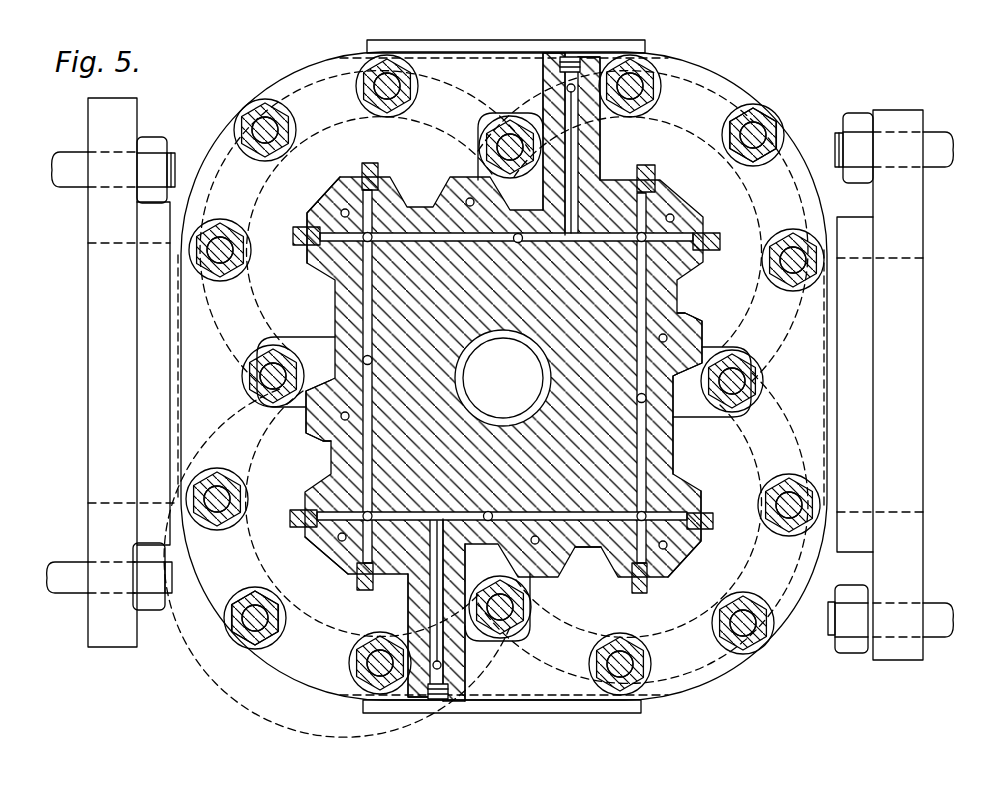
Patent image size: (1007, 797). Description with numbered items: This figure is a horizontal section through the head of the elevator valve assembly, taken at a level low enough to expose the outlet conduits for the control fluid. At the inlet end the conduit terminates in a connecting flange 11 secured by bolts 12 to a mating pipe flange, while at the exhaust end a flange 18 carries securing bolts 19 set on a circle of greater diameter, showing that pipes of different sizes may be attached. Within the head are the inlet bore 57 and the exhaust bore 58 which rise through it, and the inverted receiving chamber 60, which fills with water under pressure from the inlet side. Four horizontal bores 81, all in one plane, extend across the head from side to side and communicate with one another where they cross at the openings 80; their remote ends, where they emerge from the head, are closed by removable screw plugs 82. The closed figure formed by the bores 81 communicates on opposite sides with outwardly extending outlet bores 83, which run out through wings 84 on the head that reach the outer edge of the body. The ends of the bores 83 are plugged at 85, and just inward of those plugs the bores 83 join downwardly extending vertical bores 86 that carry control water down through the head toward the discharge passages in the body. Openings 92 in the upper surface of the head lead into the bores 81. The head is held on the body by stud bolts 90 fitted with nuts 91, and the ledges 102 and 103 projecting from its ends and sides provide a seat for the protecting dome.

The connecting flange 11 is at (103, 123).
The bolts 12 is at (70, 150).
The flange 18 is at (908, 198).
The securing bolts 19 is at (935, 145).
The inlet bore 57 is at (666, 337).
The exhaust bore 58 is at (343, 213).
The receiving chamber 60 is at (672, 383).
The vertical passage 80 is at (378, 230).
The horizontal bores 81 is at (690, 220).
The screw plugs 82 is at (374, 167).
The outlet bores 83 is at (588, 128).
The wings 84 is at (544, 91).
The plugs 85 is at (565, 57).
The vertical bores 86 is at (574, 85).
The stud bolts 90 is at (753, 120).
The nuts 91 is at (762, 122).
The openings 92 is at (637, 397).
The ledges 102 is at (170, 372).
The ledges 103 is at (546, 703).